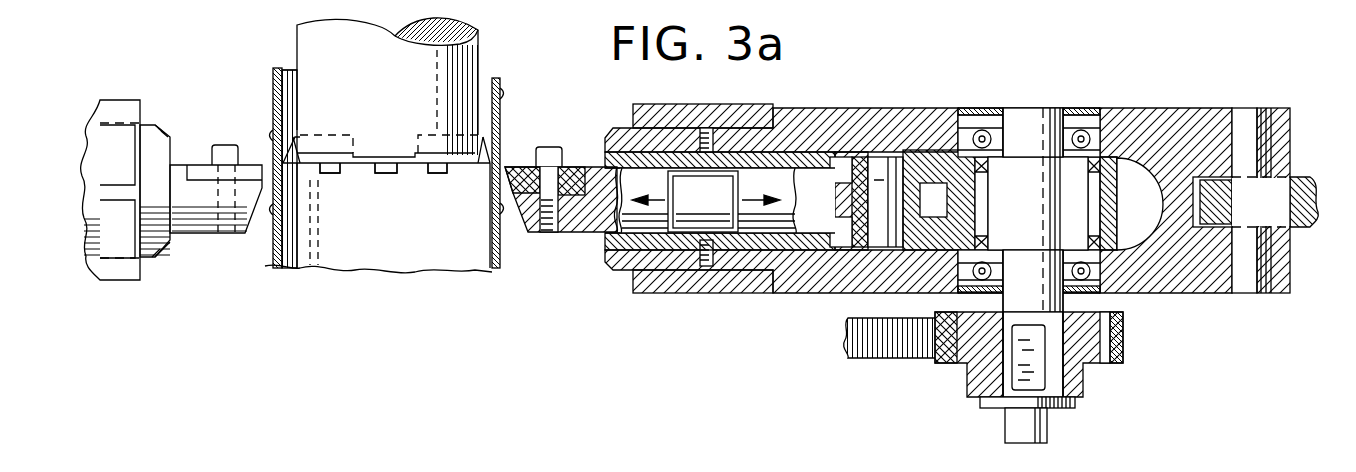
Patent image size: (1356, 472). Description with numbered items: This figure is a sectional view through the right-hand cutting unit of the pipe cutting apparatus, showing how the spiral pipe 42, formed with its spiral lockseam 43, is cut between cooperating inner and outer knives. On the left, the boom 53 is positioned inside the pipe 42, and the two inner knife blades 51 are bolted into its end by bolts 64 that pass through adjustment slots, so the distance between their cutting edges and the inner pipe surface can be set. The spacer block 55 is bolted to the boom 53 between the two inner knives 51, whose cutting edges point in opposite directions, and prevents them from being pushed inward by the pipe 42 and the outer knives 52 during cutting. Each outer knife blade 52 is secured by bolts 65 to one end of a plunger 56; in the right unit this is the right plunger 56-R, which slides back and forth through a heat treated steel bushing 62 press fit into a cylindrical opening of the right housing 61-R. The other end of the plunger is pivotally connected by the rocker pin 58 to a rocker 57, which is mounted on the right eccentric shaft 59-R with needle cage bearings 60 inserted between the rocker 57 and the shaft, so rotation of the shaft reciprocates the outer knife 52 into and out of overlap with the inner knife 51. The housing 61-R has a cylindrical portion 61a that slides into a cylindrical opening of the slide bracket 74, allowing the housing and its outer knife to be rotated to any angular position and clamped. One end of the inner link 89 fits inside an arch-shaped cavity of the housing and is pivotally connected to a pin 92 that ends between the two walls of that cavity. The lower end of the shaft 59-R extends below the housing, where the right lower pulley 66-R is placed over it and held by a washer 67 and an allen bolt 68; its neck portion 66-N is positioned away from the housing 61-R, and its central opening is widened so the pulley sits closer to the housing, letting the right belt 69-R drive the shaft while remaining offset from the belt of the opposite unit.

The spiral pipe 42 is at (378, 266).
The lockseam 43 is at (277, 255).
The inner knife blade 51 is at (294, 164).
The outer knife blade 52 is at (238, 165).
The boom 53 is at (413, 78).
The spacer block 55 is at (370, 165).
The plunger 56 is at (205, 234).
The right plunger 56-R is at (648, 178).
The rocker 57 is at (944, 175).
The rocker pin 58 is at (886, 170).
The right eccentric shaft 59-R is at (1028, 115).
The needle cage bearings 60 is at (1130, 195).
The cylindrical portion of the housing 61a is at (150, 260).
The right housing 61-R is at (876, 120).
The bushing 62 is at (606, 240).
The bolts 64 is at (500, 207).
The bolts 65 is at (222, 154).
The neck portion 66-N is at (970, 384).
The right lower pulley 66-R is at (1082, 376).
The washer 67 is at (1062, 410).
The allen bolt 68 is at (1047, 432).
The right belt 69-R is at (896, 342).
The slide bracket 74 is at (710, 294).
The inner link 89 is at (1309, 180).
The pin 92 is at (1255, 276).